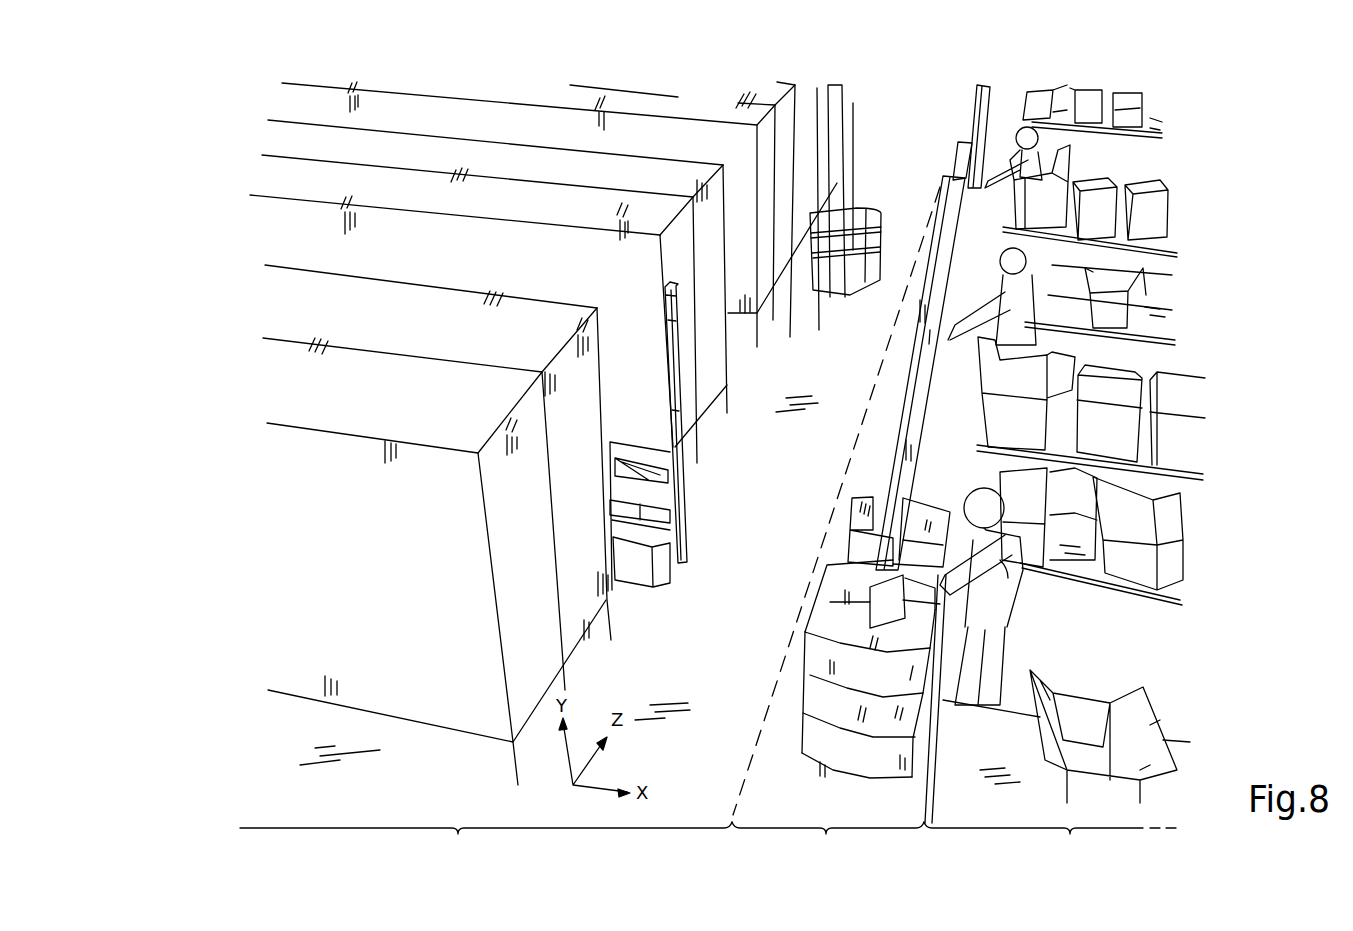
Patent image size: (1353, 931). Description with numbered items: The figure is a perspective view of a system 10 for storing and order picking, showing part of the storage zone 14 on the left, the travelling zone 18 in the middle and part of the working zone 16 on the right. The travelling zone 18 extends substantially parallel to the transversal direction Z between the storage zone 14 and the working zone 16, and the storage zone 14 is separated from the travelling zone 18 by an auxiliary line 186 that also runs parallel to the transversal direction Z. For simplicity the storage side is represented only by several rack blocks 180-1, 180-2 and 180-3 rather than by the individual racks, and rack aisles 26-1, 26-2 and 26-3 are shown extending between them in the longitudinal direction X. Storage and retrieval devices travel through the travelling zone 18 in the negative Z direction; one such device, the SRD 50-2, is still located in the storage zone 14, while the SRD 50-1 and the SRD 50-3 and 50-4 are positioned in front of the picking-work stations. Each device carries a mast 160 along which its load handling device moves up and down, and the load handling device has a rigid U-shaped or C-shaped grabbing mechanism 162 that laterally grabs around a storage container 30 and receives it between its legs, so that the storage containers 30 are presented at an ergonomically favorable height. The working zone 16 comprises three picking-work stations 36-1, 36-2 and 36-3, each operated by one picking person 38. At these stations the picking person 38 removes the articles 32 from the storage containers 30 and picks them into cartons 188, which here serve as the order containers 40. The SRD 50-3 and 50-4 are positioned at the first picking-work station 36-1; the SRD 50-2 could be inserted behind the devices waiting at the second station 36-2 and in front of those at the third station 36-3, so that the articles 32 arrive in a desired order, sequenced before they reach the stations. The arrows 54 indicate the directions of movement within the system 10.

The system 10 is at (257, 253).
The storage zone 14 is at (486, 843).
The working zone 16 is at (1050, 842).
The travelling zone 18 is at (828, 843).
The rack aisle 26-1 is at (498, 274).
The rack aisle 26-2 is at (698, 155).
The rack aisle 26-3 is at (559, 214).
The storage container 30 is at (815, 660).
The article 32 is at (868, 618).
The picking-work station 36-1 is at (1153, 654).
The picking-work station 36-2 is at (1190, 357).
The picking-work station 36-3 is at (1182, 183).
The picking person 38 is at (1018, 130).
The order container 40 is at (1041, 748).
The SRD 50-1 is at (653, 600).
The SRD 50-2 is at (823, 300).
The SRD 50-3 is at (842, 521).
The SRD 50-4 is at (805, 608).
The conveying direction / lift 54 is at (688, 570).
The mast 160 is at (684, 492).
The grabbing mechanism 162 is at (641, 462).
The rack block 180-1 is at (405, 397).
The rack block 180-2 is at (578, 180).
The rack block 180-3 is at (722, 111).
The auxiliary line 186 is at (760, 748).
The carton 188 is at (1143, 687).